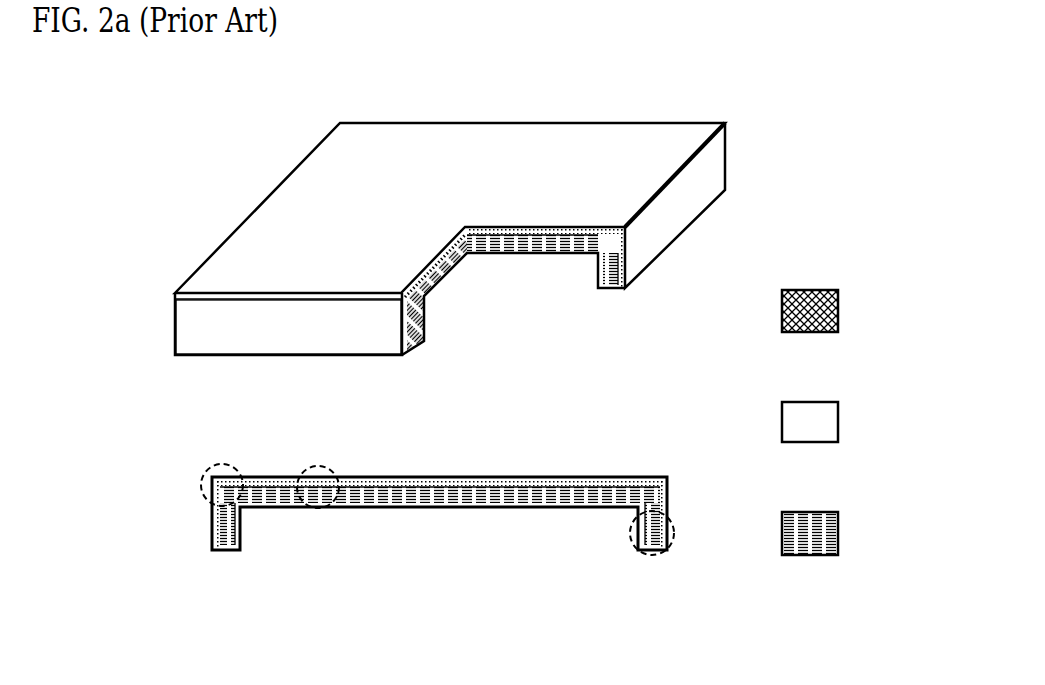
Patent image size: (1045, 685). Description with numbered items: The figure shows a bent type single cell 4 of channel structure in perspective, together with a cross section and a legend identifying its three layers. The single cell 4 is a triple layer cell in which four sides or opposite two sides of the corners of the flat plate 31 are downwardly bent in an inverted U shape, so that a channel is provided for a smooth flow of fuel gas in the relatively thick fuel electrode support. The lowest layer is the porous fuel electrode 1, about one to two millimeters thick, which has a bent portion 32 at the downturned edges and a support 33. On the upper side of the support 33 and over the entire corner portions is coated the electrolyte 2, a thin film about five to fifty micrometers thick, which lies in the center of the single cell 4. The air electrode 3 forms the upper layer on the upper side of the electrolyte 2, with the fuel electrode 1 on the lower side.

The porous fuel electrode 1 is at (518, 251).
The electrolyte 2 is at (200, 320).
The air electrode 3 is at (250, 241).
The single cell 4 is at (258, 150).
The flat plate 31 is at (319, 462).
The bent portion 32 is at (190, 479).
The support 33 is at (653, 557).